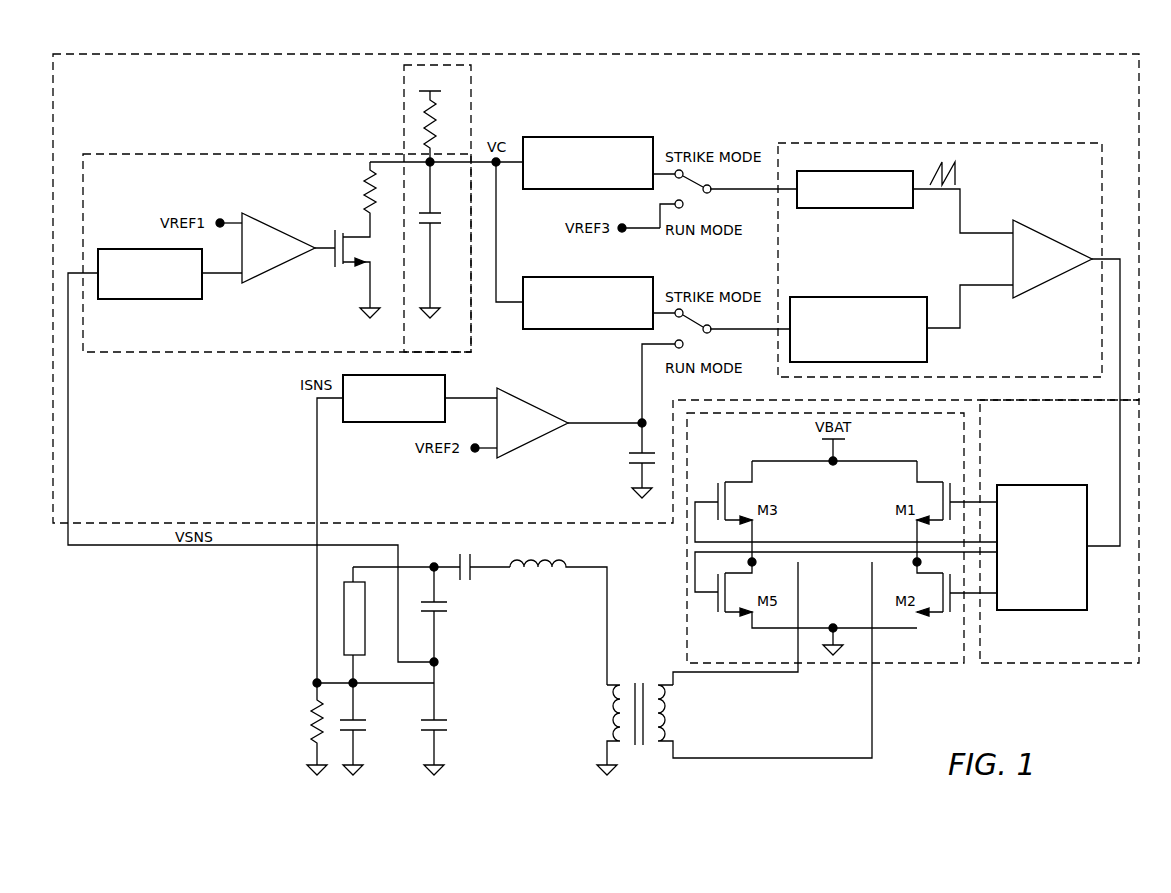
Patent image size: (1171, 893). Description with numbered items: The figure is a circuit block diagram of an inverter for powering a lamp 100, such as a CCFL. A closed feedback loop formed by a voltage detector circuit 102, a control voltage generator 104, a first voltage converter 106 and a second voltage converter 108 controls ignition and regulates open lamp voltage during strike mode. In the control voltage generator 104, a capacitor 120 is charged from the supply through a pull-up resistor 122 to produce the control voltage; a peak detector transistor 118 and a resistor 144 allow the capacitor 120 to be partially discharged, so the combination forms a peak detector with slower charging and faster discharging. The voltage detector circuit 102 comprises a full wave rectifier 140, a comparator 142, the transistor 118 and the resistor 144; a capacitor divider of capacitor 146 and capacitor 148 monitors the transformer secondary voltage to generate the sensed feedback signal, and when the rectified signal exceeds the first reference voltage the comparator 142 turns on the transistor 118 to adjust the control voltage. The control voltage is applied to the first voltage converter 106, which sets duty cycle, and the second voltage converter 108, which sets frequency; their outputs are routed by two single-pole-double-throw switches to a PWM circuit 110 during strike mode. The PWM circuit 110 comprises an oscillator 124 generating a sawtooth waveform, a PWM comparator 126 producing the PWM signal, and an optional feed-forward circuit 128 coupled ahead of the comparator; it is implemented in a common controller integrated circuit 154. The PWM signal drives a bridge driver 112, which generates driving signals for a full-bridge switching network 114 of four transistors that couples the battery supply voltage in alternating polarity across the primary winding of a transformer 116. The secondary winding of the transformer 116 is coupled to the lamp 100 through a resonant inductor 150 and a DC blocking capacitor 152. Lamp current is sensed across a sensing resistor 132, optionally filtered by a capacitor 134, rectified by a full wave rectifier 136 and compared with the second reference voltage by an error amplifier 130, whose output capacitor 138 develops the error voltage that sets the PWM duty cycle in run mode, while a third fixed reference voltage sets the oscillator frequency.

The lamp 100 is at (365, 630).
The voltage detector circuit 102 is at (175, 352).
The control voltage generator 104 is at (458, 352).
The first voltage converter 106 is at (585, 329).
The second voltage converter 108 is at (578, 137).
The PWM circuit 110 is at (938, 143).
The bridge driver 112 is at (1040, 485).
The switching network 114 is at (930, 663).
The transformer 116 is at (640, 745).
The peak detector transistor 118 is at (366, 280).
The capacitor 120 is at (437, 228).
The pull-up resistor 122 is at (425, 125).
The oscillator 124 is at (832, 208).
The PWM comparator 126 is at (1040, 233).
The optional feed-forward circuit 128 is at (885, 297).
The error amplifier 130 is at (533, 445).
The sensing resistor 132 is at (310, 728).
The capacitor 134 is at (362, 719).
The full wave rectifier 136 is at (375, 422).
The capacitor 138 is at (640, 452).
The full wave rectifier 140 is at (125, 249).
The comparator 142 is at (262, 215).
The resistor 144 is at (366, 182).
The capacitor 146 is at (440, 614).
The capacitor 148 is at (440, 733).
The resonant inductor 150 is at (568, 558).
The DC blocking capacitor 152 is at (474, 572).
The controller integrated circuit 154 is at (1057, 663).